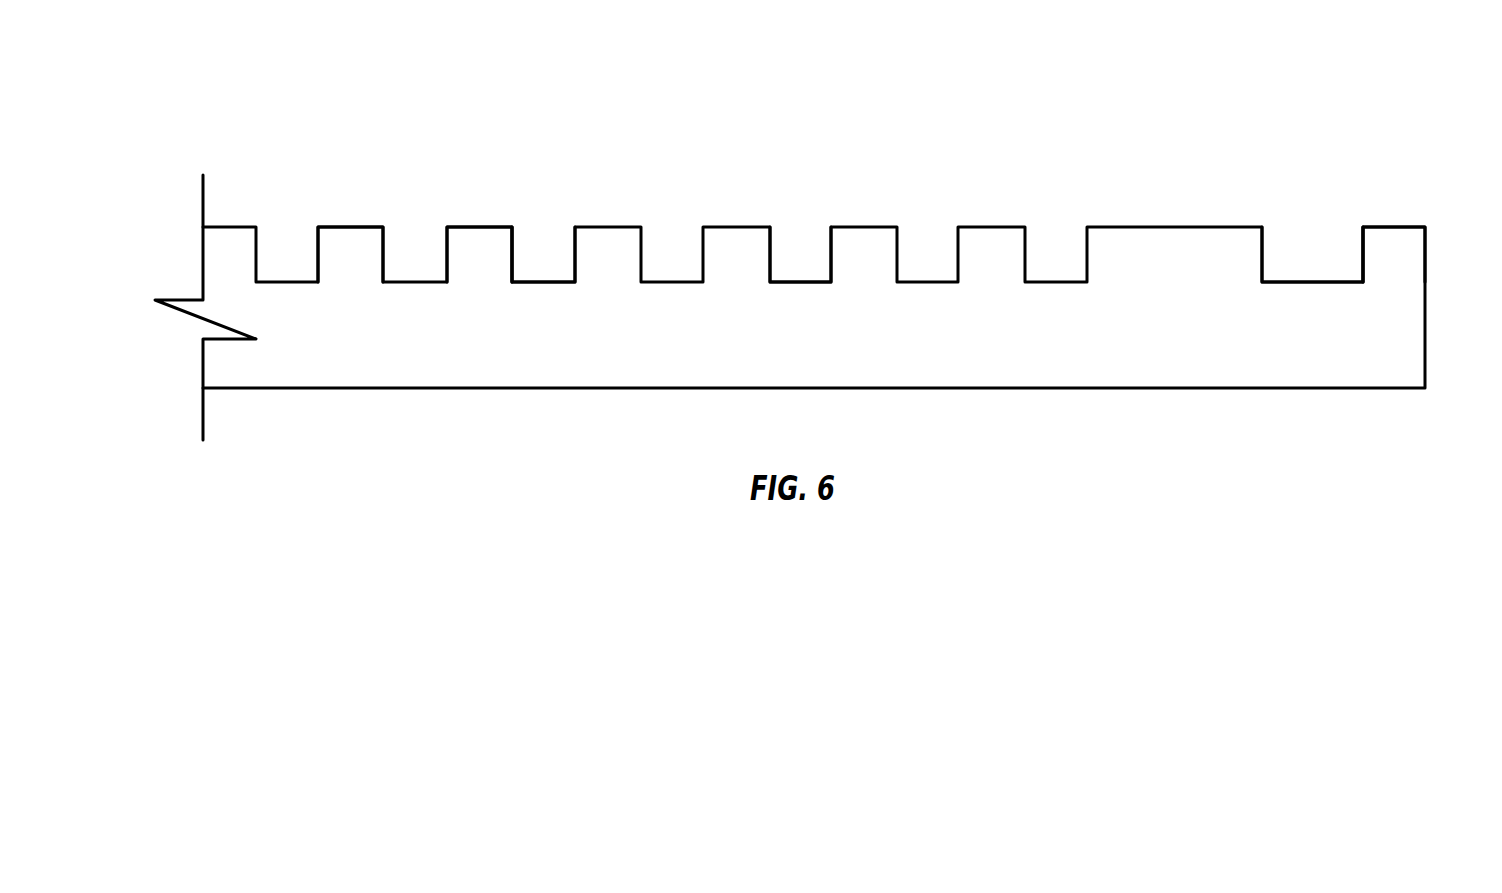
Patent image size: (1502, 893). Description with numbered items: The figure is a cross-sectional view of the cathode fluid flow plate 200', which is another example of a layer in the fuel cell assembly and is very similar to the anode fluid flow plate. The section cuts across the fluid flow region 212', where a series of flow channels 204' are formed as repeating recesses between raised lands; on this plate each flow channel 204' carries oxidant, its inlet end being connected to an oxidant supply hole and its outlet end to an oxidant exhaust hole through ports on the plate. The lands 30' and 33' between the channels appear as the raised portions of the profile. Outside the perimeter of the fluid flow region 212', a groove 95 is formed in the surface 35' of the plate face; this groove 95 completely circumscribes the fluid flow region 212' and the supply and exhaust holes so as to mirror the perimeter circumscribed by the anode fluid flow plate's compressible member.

The cathode fluid flow plate 200' is at (814, 206).
The fluid flow region 212' is at (790, 272).
The ridge top surface 30' is at (376, 224).
The ridge 33' is at (502, 224).
The flow channel 204' is at (715, 224).
The groove 95 is at (1307, 245).
The surface 35' is at (1426, 223).